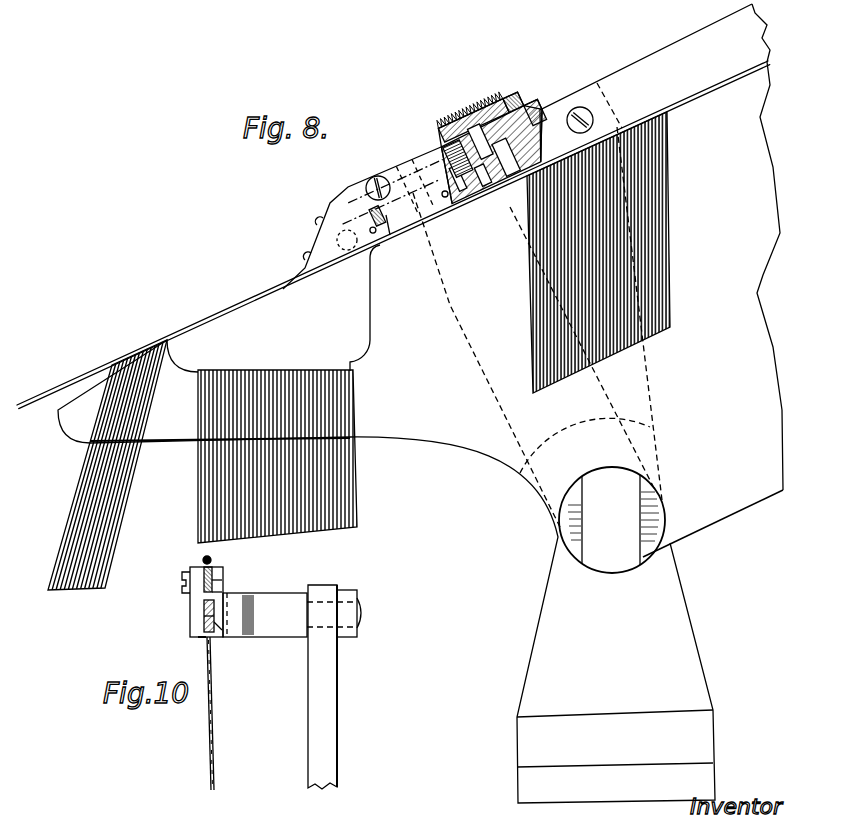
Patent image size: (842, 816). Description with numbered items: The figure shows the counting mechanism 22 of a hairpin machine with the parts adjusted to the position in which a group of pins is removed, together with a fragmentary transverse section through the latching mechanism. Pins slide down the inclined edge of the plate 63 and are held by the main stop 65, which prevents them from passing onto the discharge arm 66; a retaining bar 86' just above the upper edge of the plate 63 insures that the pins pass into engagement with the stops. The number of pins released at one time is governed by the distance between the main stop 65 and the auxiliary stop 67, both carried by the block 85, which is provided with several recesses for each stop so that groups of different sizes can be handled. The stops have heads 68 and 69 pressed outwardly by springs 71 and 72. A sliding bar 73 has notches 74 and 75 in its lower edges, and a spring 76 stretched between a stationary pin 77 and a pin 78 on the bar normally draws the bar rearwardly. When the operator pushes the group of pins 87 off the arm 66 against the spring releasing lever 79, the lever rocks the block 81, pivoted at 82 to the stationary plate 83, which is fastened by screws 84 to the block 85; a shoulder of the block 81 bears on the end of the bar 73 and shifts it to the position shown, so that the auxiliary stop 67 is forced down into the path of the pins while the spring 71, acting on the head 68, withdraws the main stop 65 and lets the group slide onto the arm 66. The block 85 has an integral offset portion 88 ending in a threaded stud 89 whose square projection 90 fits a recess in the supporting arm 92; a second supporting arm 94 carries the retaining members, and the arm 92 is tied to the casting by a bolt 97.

In FIG. 8, the counting mechanism 22 is at (655, 276).
In FIG. 8, the plate 63 is at (740, 493).
In FIG. 10, the plate 63 is at (215, 703).
In FIG. 8, the main stop 65 is at (388, 232).
In FIG. 8, the discharge arm 66 is at (180, 433).
In FIG. 8, the auxiliary stop 67 is at (521, 180).
In FIG. 10, the auxiliary stop 67 is at (205, 635).
In FIG. 8, the head of main stop 68 is at (373, 217).
In FIG. 8, the head of auxiliary stop 69 is at (530, 146).
In FIG. 10, the head of auxiliary stop 69 is at (205, 603).
In FIG. 8, the spring 71 is at (377, 228).
In FIG. 8, the spring 72 is at (543, 162).
In FIG. 10, the spring 72 is at (215, 625).
In FIG. 8, the sliding bar 73 is at (530, 122).
In FIG. 10, the sliding bar 73 is at (219, 590).
In FIG. 8, the notches 74 is at (368, 178).
In FIG. 8, the notches 75 is at (470, 124).
In FIG. 10, the notches 75 is at (222, 597).
In FIG. 8, the spring 76 is at (487, 106).
In FIG. 10, the spring 76 is at (204, 560).
In FIG. 8, the stationary pin 77 is at (437, 137).
In FIG. 8, the pin 78 is at (503, 104).
In FIG. 10, the pin 78 is at (212, 578).
In FIG. 8, the spring releasing lever 79 is at (200, 322).
In FIG. 8, the pivoted block 81 is at (323, 263).
In FIG. 8, the pivot 82 is at (307, 260).
In FIG. 8, the stationary plate 83 is at (405, 172).
In FIG. 8, the screws 84 is at (445, 197).
In FIG. 8, the block 85 is at (463, 194).
In FIG. 10, the block 85 is at (203, 626).
In FIG. 8, the retaining bar 86' is at (655, 83).
In FIG. 8, the group of pins 87 is at (97, 490).
In FIG. 10, the offset portion 88 is at (275, 628).
In FIG. 10, the threaded stud 89 is at (360, 604).
In FIG. 10, the square projection 90 is at (355, 592).
In FIG. 8, the arm 92 is at (502, 412).
In FIG. 10, the arm 92 is at (337, 735).
In FIG. 8, the second supporting arm 94 is at (650, 377).
In FIG. 8, the bolt 97 is at (642, 537).